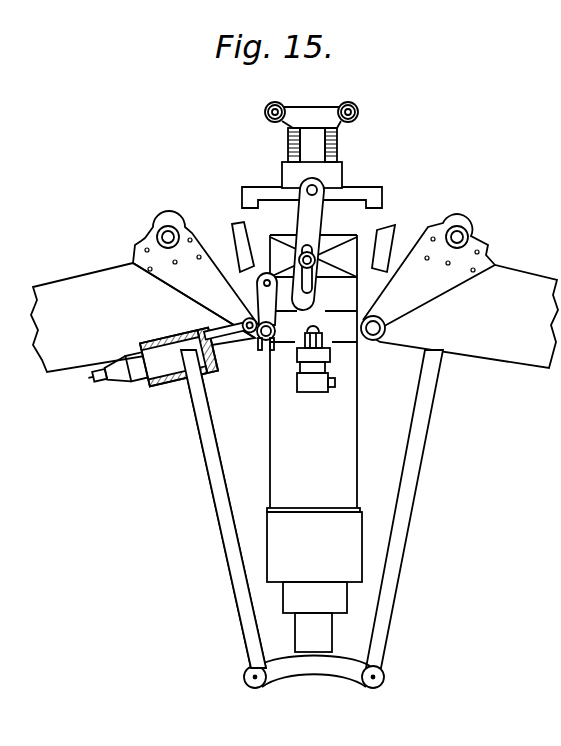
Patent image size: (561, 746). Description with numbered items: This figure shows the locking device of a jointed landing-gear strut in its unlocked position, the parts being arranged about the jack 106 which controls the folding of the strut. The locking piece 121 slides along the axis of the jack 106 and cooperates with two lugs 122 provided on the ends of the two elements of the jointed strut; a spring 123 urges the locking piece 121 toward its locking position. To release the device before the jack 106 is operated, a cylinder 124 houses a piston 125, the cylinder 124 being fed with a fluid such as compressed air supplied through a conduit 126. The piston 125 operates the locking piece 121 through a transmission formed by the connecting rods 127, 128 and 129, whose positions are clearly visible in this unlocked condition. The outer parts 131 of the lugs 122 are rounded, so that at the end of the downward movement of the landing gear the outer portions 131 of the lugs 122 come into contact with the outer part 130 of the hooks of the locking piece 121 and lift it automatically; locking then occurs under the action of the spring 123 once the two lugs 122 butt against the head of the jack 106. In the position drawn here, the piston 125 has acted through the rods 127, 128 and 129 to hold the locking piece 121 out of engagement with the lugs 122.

The jack 106 is at (333, 488).
The locking piece 121 is at (349, 190).
The lugs 122 is at (236, 246).
The spring 123 is at (334, 139).
The cylinder 124 is at (156, 378).
The piston 125 is at (203, 374).
The conduit 126 is at (96, 378).
The connecting rod 127 is at (244, 343).
The connecting rod 128 is at (262, 297).
The connecting rod 129 is at (313, 225).
The outer part of the hooks 130 is at (250, 203).
The outer parts of the lugs 131 is at (240, 246).